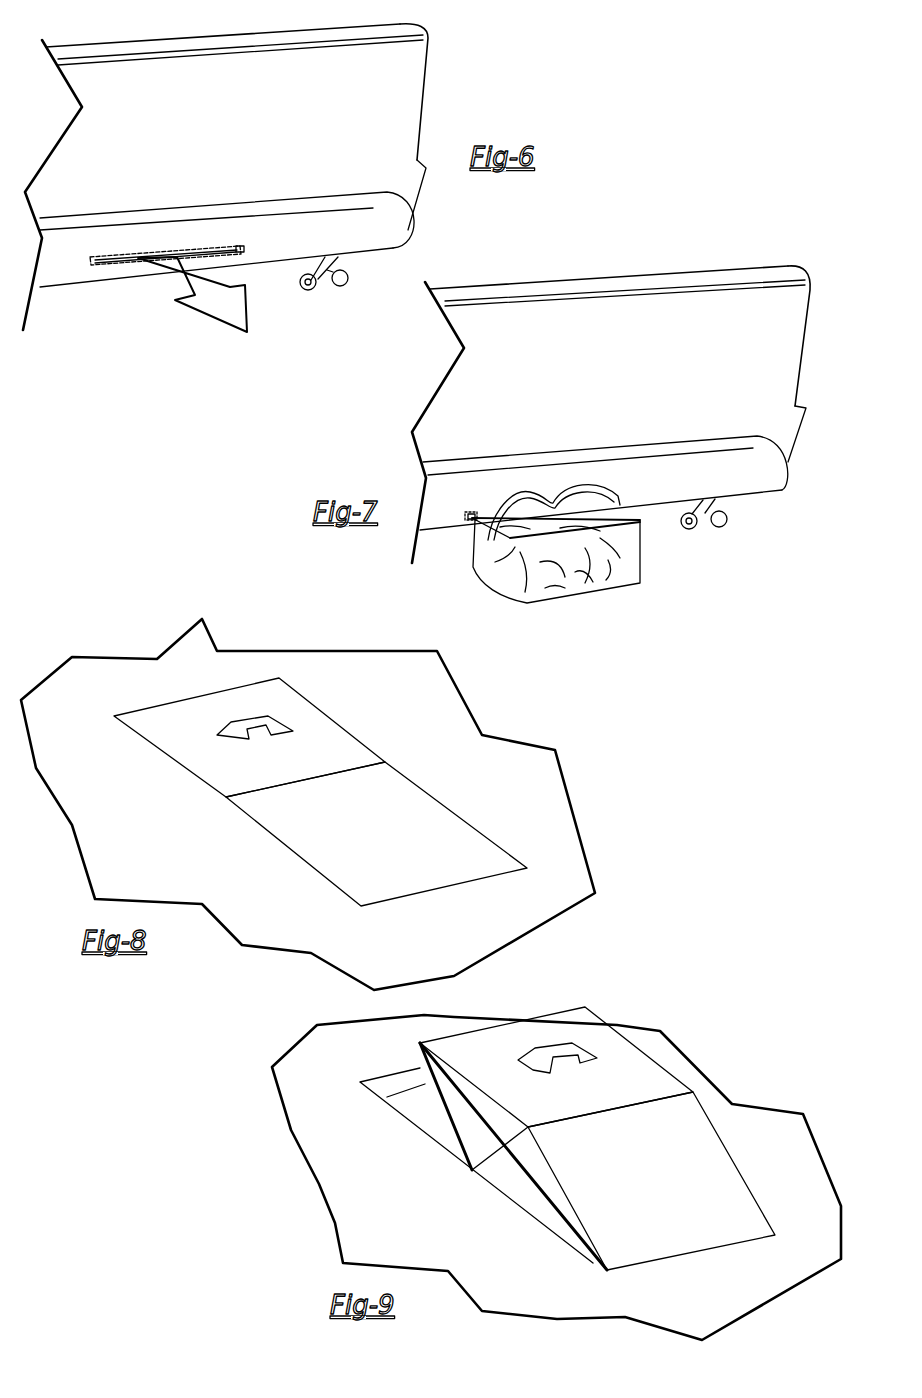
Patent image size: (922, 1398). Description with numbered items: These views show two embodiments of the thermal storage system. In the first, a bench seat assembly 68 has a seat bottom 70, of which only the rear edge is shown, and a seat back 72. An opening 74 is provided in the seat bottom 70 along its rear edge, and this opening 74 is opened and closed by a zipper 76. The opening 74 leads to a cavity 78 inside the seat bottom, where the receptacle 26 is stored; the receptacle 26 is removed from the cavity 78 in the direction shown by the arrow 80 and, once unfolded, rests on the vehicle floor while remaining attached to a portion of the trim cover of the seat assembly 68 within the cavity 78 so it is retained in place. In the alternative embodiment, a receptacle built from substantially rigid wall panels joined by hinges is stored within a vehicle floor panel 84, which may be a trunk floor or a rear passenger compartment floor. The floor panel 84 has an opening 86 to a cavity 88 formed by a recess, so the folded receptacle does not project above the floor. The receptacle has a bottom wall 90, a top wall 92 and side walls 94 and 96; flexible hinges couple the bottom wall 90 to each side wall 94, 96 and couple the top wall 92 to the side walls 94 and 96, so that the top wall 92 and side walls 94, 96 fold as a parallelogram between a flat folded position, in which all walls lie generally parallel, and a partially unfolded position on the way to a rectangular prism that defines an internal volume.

In FIG. 7, the receptacle 26 is at (645, 563).
In FIG. 6, the bench seat assembly 68 is at (432, 66).
In FIG. 7, the bench seat assembly 68 is at (607, 270).
In FIG. 6, the seat bottom 70 is at (72, 273).
In FIG. 7, the seat bottom 70 is at (443, 528).
In FIG. 6, the seat back 72 is at (182, 44).
In FIG. 7, the seat back 72 is at (517, 290).
In FIG. 6, the opening 74 is at (133, 263).
In FIG. 6, the zipper 76 is at (238, 256).
In FIG. 6, the cavity 78 is at (189, 246).
In FIG. 6, the arrow 80 is at (222, 317).
In FIG. 8, the vehicle floor panel 84 is at (122, 826).
In FIG. 9, the vehicle floor panel 84 is at (556, 1177).
In FIG. 9, the opening 86 is at (387, 1075).
In FIG. 9, the cavity 88 is at (424, 1115).
In FIG. 9, the bottom wall 90 is at (540, 1197).
In FIG. 8, the top wall 92 is at (355, 752).
In FIG. 9, the top wall 92 is at (603, 1040).
In FIG. 8, the side wall 94 is at (469, 851).
In FIG. 9, the side wall 94 is at (702, 1148).
In FIG. 9, the side wall 96 is at (450, 1120).